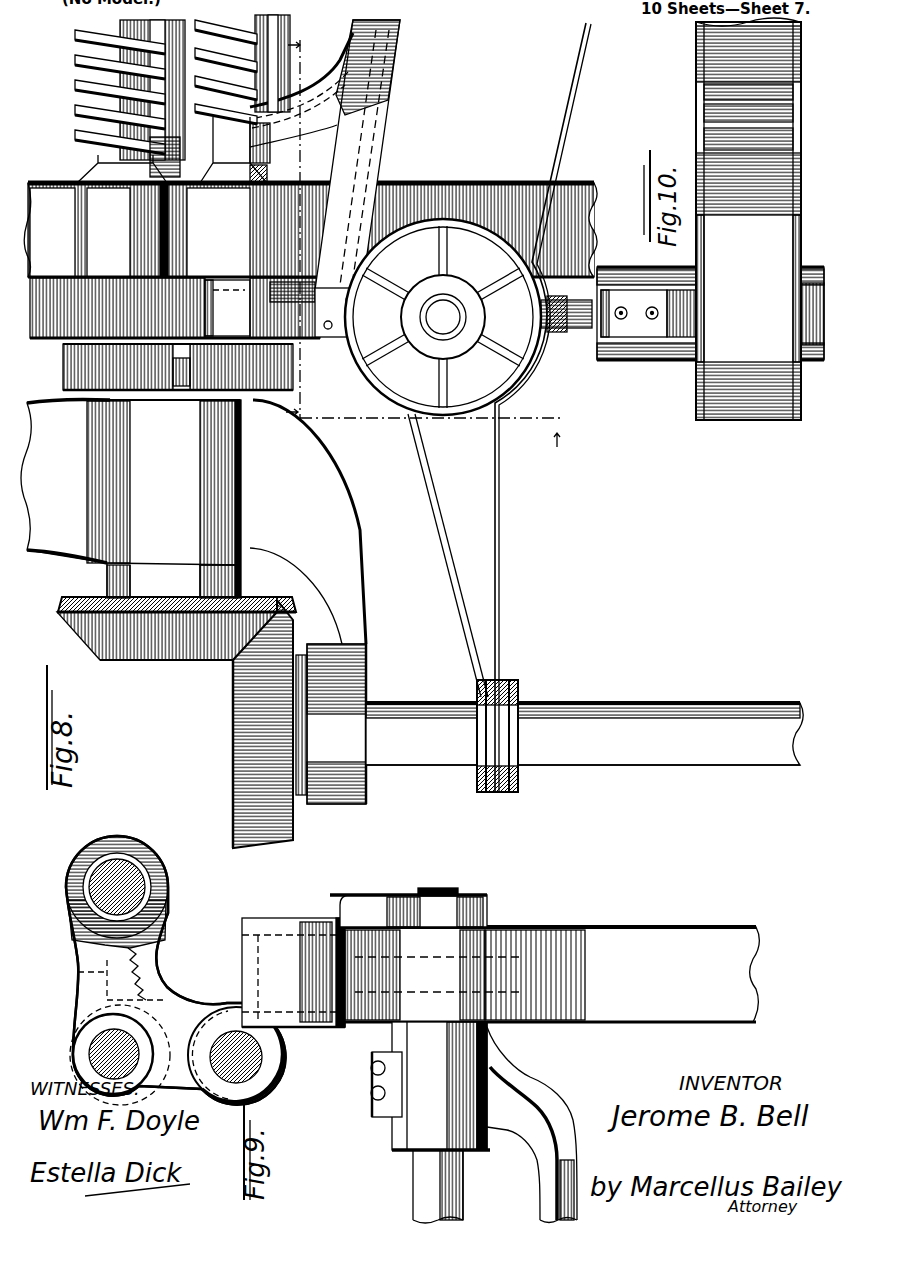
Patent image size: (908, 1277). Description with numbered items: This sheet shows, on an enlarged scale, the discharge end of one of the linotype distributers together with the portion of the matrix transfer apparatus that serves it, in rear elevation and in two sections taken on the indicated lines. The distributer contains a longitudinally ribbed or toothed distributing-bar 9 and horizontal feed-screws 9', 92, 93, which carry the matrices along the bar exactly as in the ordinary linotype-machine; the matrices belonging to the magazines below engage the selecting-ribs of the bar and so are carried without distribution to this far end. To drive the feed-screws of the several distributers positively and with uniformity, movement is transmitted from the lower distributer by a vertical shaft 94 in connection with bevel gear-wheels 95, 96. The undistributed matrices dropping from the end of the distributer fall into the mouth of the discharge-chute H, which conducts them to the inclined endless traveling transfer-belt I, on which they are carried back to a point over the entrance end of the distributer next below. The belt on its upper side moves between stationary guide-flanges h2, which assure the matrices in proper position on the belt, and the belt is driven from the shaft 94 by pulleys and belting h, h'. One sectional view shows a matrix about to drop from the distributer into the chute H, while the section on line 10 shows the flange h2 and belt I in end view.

In FIG. 8, the distributing-bar 9 is at (309, 360).
In FIG. 9, the distributing-bar 9 is at (168, 970).
In FIG. 8, the feed-screw 92 is at (76, 67).
In FIG. 9, the feed-screw 92 is at (122, 836).
In FIG. 8, the feed-screw 93 is at (287, 67).
In FIG. 9, the feed-screw 93 is at (260, 1067).
In FIG. 8, the vertical shaft 94 is at (617, 703).
In FIG. 8, the bevel gear-wheel 95 is at (233, 738).
In FIG. 8, the bevel gear-wheel 96 is at (178, 660).
In FIG. 9, the feed-screw 9' is at (86, 1054).
In FIG. 8, the pulley h is at (517, 722).
In FIG. 8, the belting h' is at (499, 407).
In FIG. 8, the guide-flange h2 is at (387, 87).
In FIG. 10, the guide-flange h2 is at (790, 187).
In FIG. 9, the guide-flange h2 is at (340, 912).
In FIG. 8, the chute H is at (294, 128).
In FIG. 9, the chute H is at (277, 940).
In FIG. 8, the transfer-belt I is at (370, 143).
In FIG. 10, the transfer-belt I is at (748, 219).
In FIG. 9, the transfer-belt I is at (350, 927).
In FIG. 8, the section line 10 is at (423, 229).